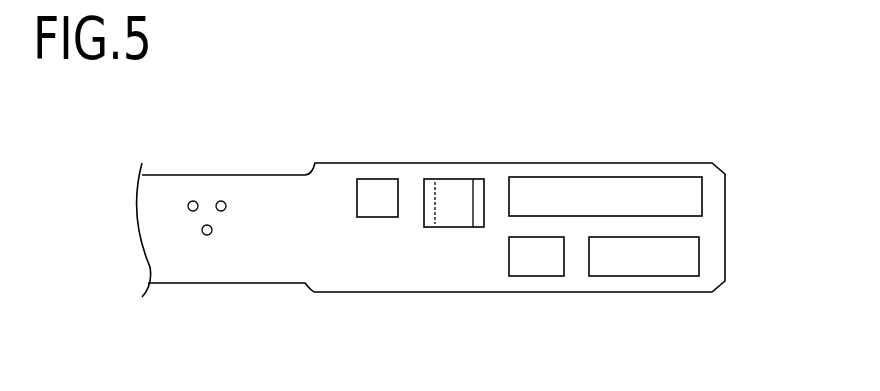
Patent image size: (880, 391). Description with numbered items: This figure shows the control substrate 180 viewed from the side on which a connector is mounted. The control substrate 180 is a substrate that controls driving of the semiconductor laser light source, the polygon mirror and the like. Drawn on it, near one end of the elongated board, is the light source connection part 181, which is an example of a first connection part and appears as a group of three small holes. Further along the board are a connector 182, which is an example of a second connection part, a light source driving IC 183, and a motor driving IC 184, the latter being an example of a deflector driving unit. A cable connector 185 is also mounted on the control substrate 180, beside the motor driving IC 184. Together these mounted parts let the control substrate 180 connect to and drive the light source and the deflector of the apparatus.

The control substrate 180 is at (470, 145).
The light source connection part 181 is at (207, 190).
The connector 182 is at (628, 190).
The light source driving IC 183 is at (375, 205).
The motor driving IC 184 is at (540, 265).
The cable connector 185 is at (653, 265).